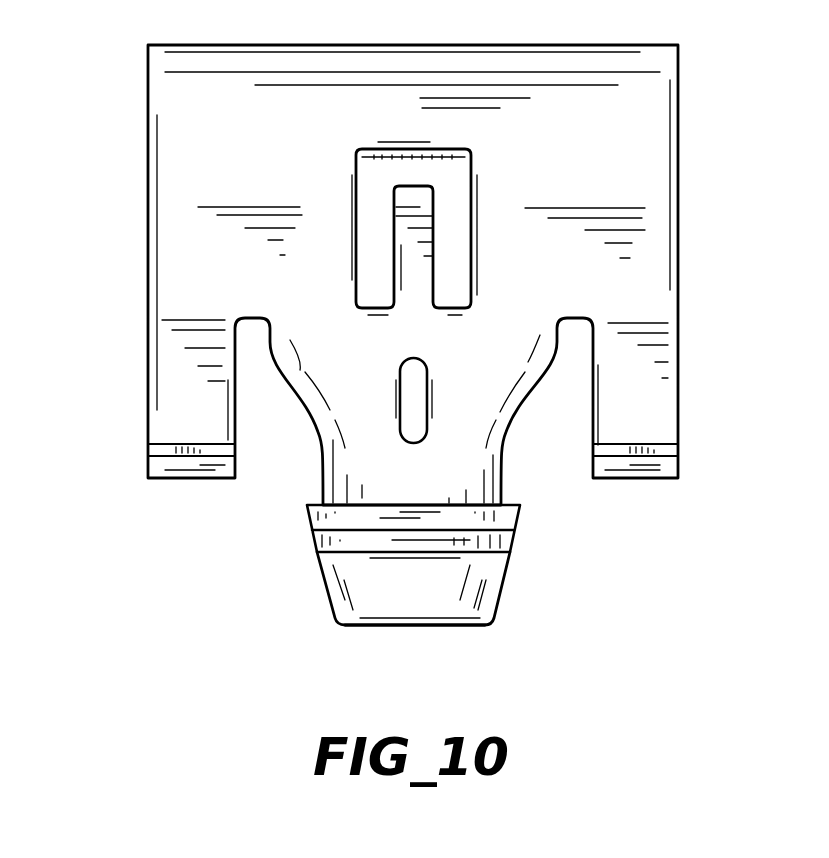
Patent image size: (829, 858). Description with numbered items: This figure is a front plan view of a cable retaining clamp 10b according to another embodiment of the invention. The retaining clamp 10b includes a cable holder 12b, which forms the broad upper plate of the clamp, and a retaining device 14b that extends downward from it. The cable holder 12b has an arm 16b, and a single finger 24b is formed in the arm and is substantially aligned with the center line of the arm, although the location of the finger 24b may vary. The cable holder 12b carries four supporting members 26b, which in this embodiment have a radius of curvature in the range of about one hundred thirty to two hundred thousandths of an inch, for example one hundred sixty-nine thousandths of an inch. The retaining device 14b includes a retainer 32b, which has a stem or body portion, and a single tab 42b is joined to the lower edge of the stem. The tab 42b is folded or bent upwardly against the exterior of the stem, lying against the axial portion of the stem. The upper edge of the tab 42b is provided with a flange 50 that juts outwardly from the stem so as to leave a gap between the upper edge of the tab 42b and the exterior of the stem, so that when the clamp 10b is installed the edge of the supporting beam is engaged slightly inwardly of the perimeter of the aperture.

The retaining clamp 10b is at (132, 104).
The cable holder 12b is at (694, 111).
The retaining device 14b is at (537, 571).
The arm 16b is at (645, 247).
The finger 24b is at (403, 235).
The supporting members 26b is at (190, 430).
The retainer 32b is at (381, 640).
The tab 42b is at (428, 593).
The flange 50 is at (308, 517).